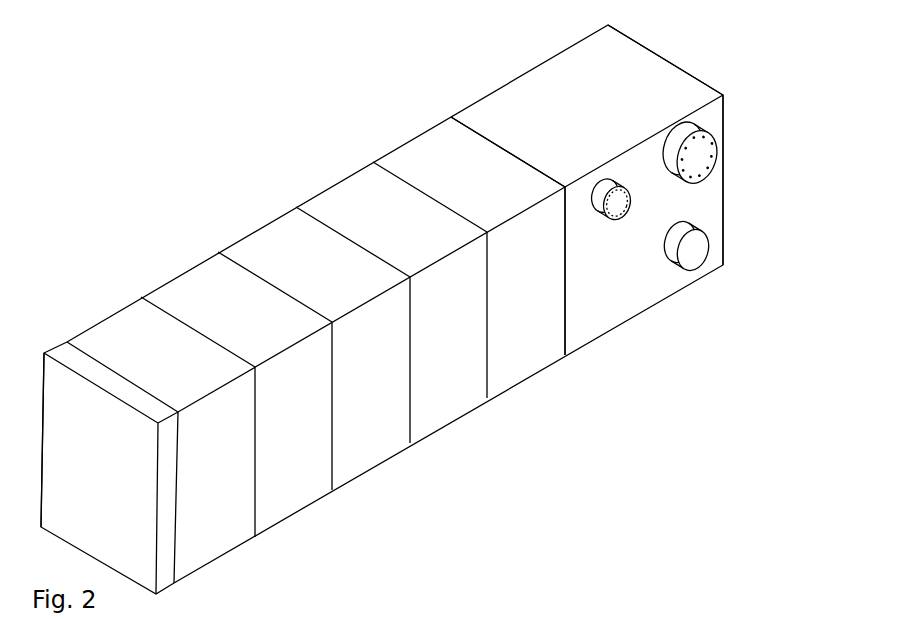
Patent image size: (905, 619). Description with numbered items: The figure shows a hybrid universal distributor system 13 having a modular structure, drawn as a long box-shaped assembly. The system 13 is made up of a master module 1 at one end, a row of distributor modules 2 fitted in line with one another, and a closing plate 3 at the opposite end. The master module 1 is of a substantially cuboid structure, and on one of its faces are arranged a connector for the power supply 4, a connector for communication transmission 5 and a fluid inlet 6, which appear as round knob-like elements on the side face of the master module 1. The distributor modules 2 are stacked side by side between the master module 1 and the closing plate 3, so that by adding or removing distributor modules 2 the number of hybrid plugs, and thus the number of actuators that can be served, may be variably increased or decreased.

The master module 1 is at (630, 88).
The distributor modules 2 is at (432, 157).
The closing plate 3 is at (68, 360).
The connector for the power supply 4 is at (697, 163).
The connector for communication transmission 5 is at (630, 205).
The fluid inlet 6 is at (693, 252).
The hybrid universal distributor system 13 is at (128, 90).